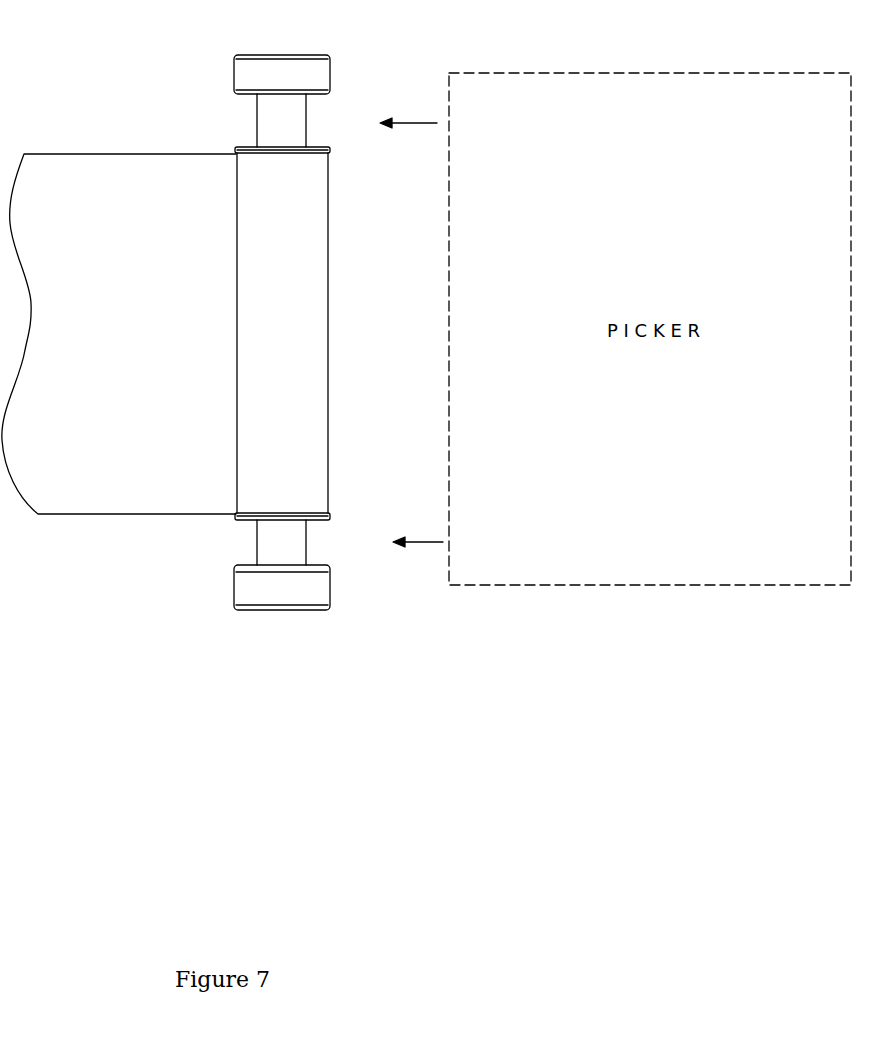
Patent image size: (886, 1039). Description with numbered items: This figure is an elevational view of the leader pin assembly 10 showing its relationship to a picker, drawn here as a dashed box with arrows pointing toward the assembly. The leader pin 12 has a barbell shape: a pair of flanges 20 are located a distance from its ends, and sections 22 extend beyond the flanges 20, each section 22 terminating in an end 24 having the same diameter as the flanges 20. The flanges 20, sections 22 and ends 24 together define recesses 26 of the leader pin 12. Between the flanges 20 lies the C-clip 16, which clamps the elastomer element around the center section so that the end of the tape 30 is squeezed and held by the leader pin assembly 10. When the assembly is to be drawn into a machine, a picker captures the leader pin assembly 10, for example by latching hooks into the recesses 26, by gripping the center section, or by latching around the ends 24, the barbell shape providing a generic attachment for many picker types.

The leader pin assembly 10 is at (261, 366).
The leader pin 12 is at (323, 613).
The C-clip 16 is at (250, 497).
The flanges 20 is at (329, 146).
The sections 22 is at (305, 128).
The ends 24 is at (308, 69).
The recesses 26 is at (248, 123).
The tape 30 is at (103, 482).